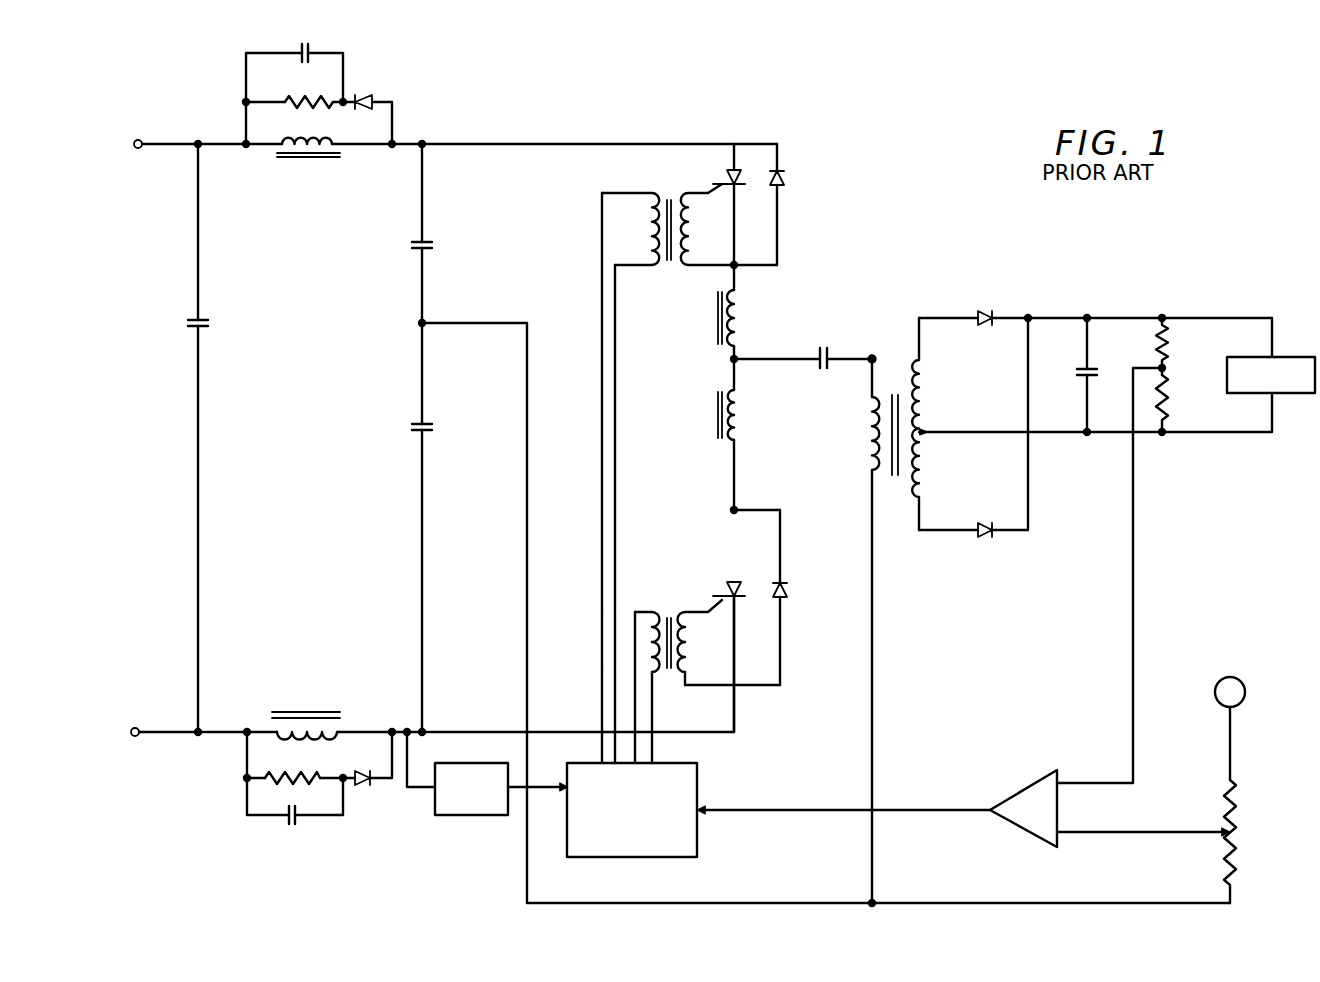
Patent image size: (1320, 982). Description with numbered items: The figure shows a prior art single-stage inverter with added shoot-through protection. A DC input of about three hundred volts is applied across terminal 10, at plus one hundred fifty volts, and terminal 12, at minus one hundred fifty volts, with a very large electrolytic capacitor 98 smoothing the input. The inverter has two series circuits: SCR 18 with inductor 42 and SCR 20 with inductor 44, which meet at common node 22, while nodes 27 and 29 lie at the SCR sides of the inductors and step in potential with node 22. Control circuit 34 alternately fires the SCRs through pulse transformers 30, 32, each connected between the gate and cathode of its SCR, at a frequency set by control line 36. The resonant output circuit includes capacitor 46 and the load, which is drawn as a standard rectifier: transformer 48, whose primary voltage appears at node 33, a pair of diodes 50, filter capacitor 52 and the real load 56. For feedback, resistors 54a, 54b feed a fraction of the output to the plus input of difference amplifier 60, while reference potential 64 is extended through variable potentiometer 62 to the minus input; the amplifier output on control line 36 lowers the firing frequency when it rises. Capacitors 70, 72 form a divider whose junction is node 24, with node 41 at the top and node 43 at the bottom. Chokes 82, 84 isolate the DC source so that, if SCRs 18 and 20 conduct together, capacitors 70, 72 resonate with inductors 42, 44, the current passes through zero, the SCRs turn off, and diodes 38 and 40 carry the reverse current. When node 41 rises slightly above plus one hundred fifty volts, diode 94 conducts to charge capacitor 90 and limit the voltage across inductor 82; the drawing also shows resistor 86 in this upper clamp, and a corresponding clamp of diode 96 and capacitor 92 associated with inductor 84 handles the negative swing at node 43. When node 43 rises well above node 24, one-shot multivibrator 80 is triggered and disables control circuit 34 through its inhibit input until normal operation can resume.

The terminal 10 is at (145, 142).
The terminal 12 is at (138, 729).
The SCR 18 is at (723, 177).
The SCR 20 is at (723, 584).
The node 22 is at (732, 360).
The node 24 is at (420, 323).
The node 27 is at (736, 264).
The node 29 is at (732, 510).
The pulse transformer 30 is at (666, 200).
The pulse transformer 32 is at (667, 608).
The node 33 is at (870, 362).
The control circuit 34 is at (698, 776).
The control line 36 is at (810, 806).
The diode 38 is at (788, 178).
The diode 40 is at (790, 590).
The node 41 is at (424, 143).
The inductor 42 is at (742, 318).
The node 43 is at (424, 731).
The inductor 44 is at (740, 422).
The capacitor 46 is at (822, 346).
The transformer 48 is at (888, 352).
The diodes 50 is at (984, 328).
The filter capacitor 52 is at (1078, 372).
The resistor 54a is at (1169, 342).
The resistor 54b is at (1169, 408).
The load 56 is at (1300, 348).
The difference amplifier 60 is at (1026, 792).
The variable potentiometer 62 is at (1238, 828).
The reference potential 64 is at (1243, 678).
The capacitor 70 is at (433, 246).
The capacitor 72 is at (411, 428).
The one-shot multivibrator 80 is at (492, 816).
The inductor 82 is at (298, 136).
The inductor 84 is at (322, 740).
The resistor 86 is at (300, 96).
The capacitor 90 is at (304, 44).
The capacitor 92 is at (291, 826).
The diode 94 is at (363, 97).
The diode 96 is at (362, 786).
The capacitor 98 is at (190, 323).